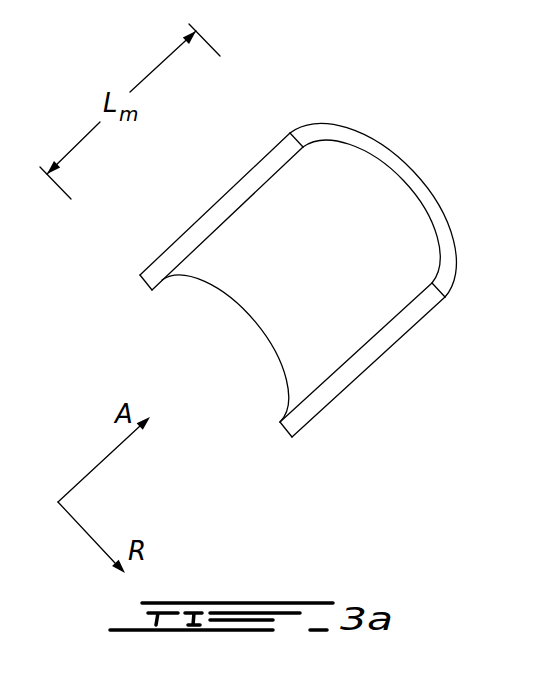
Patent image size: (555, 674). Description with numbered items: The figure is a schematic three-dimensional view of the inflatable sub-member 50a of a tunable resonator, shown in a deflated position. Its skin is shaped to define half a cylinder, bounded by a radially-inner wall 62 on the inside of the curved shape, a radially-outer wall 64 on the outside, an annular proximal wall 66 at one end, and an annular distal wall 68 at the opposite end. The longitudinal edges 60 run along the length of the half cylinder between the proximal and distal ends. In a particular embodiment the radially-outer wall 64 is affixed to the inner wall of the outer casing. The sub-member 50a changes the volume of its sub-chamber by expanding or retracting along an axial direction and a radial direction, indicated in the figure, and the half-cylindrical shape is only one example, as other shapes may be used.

The inflatable sub-member 50a is at (324, 248).
The longitudinal edges 60 is at (196, 224).
The radially-inner wall 62 is at (300, 288).
The radially-outer wall 64 is at (403, 340).
The annular proximal wall 66 is at (369, 128).
The annular distal wall 68 is at (192, 281).